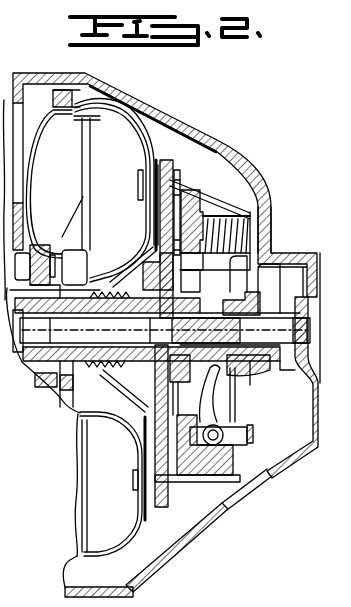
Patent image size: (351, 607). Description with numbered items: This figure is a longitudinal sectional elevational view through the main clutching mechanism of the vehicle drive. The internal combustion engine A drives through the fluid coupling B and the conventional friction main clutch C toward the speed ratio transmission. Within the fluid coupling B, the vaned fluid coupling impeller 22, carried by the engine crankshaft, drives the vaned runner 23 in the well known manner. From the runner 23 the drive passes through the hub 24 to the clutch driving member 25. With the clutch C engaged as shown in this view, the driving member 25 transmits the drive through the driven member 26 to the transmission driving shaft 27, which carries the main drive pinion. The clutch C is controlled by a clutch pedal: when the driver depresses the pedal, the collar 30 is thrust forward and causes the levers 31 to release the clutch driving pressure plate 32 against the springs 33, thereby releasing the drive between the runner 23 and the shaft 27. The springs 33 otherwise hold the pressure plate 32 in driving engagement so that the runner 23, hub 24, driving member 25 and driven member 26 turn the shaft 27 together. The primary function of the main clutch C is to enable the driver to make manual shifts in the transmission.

The internal combustion engine A is at (160, 335).
The fluid coupling B is at (125, 143).
The friction main clutch C is at (210, 170).
The vaned fluid coupling impeller 22 is at (77, 122).
The vaned runner 23 is at (101, 142).
The hub 24 is at (92, 330).
The clutch driving member 25 is at (194, 180).
The driven member 26 is at (182, 268).
The transmission driving shaft 27 is at (284, 366).
The collar 30 is at (270, 298).
The levers 31 is at (247, 389).
The clutch driving pressure plate 32 is at (204, 200).
The springs 33 is at (260, 208).